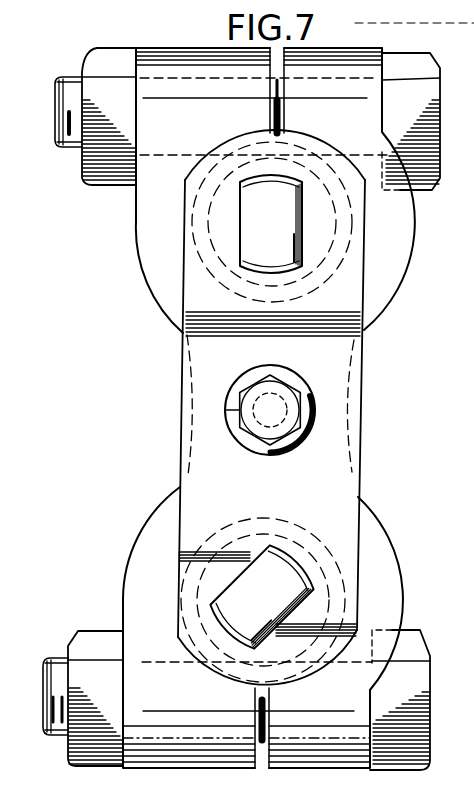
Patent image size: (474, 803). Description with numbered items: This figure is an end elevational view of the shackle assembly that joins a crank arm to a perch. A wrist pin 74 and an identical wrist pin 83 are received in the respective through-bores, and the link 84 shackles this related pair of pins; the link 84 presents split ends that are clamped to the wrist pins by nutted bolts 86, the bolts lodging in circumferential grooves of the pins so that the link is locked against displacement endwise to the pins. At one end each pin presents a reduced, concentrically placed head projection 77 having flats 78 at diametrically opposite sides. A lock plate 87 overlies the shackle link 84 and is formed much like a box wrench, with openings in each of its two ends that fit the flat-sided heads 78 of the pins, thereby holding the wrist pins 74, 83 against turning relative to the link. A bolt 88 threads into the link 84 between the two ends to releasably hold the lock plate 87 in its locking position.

The wrist pin 74 is at (298, 520).
The head projection 77 is at (254, 210).
The flats 78 is at (303, 218).
The wrist pin 83 is at (330, 283).
The link 84 is at (148, 226).
The nutted bolts 86 is at (418, 62).
The lock plate 87 is at (355, 443).
The bolt 88 is at (282, 396).